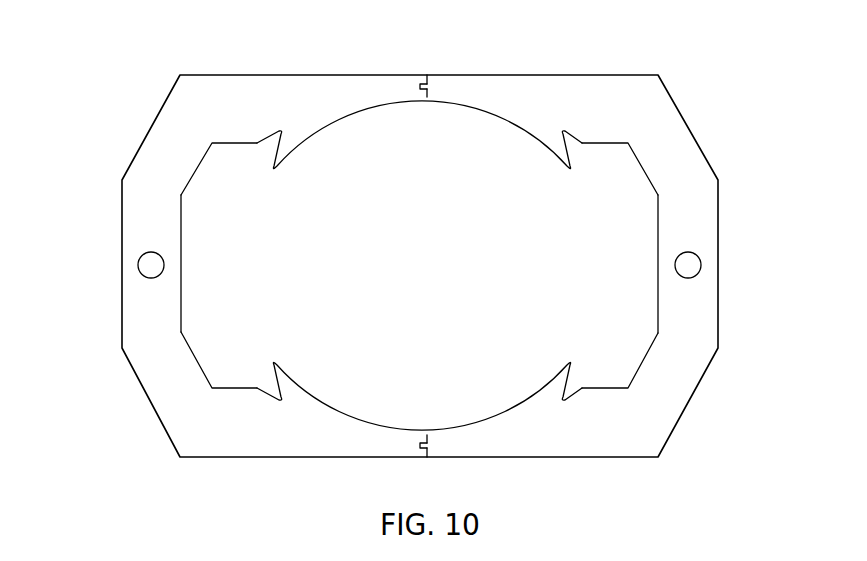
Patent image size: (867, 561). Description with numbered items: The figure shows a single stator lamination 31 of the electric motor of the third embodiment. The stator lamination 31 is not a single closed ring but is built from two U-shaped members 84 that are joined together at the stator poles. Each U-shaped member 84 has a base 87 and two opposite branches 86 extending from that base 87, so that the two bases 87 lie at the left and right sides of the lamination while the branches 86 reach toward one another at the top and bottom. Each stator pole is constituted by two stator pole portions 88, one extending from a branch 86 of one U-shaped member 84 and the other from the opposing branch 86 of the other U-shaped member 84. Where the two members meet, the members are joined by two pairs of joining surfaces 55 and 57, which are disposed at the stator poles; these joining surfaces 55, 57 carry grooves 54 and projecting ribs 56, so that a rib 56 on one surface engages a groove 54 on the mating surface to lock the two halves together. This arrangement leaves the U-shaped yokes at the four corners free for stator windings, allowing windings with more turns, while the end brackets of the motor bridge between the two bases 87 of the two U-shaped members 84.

The stator lamination 31 is at (128, 441).
The U-shaped member 84 is at (136, 132).
The branch 86 is at (237, 113).
The base 87 is at (147, 223).
The stator pole portion 88 is at (307, 128).
The groove 54 is at (421, 75).
The joining surface 55 is at (418, 435).
The projecting rib 56 is at (430, 86).
The joining surface 57 is at (435, 452).